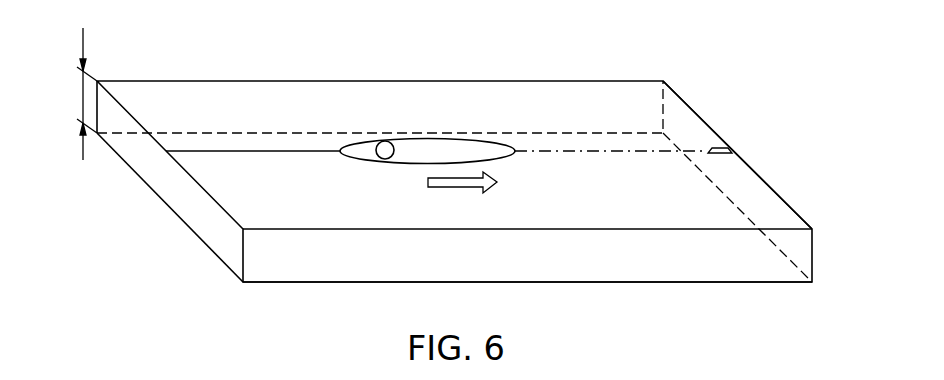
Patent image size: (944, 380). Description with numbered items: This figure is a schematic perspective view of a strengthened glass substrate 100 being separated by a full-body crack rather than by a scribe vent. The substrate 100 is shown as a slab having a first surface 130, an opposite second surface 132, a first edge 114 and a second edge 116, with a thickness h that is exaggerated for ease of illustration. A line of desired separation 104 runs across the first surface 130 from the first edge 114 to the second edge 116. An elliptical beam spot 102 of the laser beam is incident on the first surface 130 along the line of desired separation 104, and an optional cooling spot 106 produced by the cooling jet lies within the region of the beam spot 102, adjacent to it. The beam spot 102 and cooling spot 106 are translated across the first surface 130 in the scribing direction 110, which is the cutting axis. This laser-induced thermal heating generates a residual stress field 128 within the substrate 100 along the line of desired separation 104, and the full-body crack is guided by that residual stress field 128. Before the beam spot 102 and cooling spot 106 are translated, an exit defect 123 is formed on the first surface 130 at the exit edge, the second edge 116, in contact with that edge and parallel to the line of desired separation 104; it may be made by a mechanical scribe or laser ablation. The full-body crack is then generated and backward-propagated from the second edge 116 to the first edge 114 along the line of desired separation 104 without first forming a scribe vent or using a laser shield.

The strengthened glass substrate 100 is at (454, 144).
The elliptical beam spot 102 is at (490, 139).
The line of desired separation 104 is at (553, 153).
The cooling spot 106 is at (387, 141).
The scribing direction 110 is at (453, 188).
The first edge 114 is at (213, 237).
The second edge 116 is at (757, 173).
The exit defect 123 is at (722, 148).
The residual stress field 128 is at (305, 150).
The first surface 130 is at (770, 208).
The second surface 132 is at (658, 283).
The thickness h is at (83, 92).